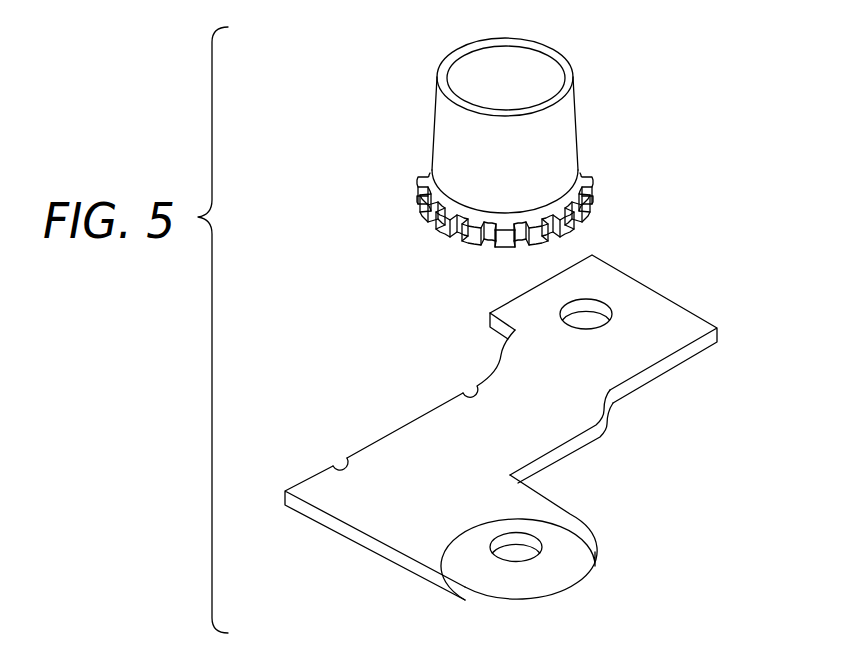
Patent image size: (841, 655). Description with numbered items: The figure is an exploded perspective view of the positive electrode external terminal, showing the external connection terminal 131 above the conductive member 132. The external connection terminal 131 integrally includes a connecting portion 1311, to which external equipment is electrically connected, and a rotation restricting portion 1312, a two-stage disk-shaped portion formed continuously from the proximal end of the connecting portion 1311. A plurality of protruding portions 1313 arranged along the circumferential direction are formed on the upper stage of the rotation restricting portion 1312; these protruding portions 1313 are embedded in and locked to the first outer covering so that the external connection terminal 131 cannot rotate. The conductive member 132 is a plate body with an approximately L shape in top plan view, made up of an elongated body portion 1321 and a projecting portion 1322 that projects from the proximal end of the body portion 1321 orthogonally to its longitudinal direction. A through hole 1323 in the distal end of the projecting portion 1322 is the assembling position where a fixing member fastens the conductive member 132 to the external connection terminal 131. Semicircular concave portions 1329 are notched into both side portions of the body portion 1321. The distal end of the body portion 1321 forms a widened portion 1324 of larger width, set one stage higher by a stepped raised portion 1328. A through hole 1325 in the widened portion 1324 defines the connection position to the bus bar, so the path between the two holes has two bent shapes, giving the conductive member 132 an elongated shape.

The external connection terminal 131 is at (578, 138).
The connecting portion 1311 is at (566, 105).
The rotation restricting portion 1312 is at (596, 200).
The protruding portions 1313 is at (594, 183).
The conductive member 132 is at (663, 292).
The body portion 1321 is at (373, 470).
The projecting portion 1322 is at (568, 572).
The through hole 1323 is at (538, 542).
The widened portion 1324 is at (533, 308).
The through hole 1325 is at (607, 307).
The raised portion 1328 is at (515, 355).
The concave portions 1329 is at (458, 390).